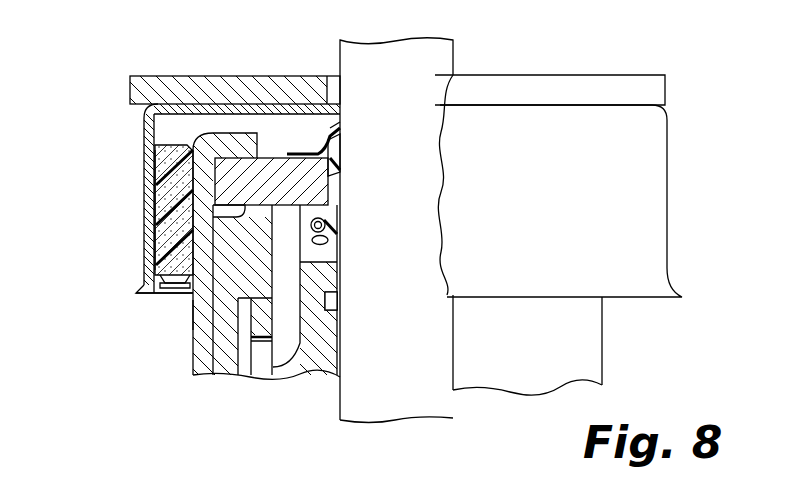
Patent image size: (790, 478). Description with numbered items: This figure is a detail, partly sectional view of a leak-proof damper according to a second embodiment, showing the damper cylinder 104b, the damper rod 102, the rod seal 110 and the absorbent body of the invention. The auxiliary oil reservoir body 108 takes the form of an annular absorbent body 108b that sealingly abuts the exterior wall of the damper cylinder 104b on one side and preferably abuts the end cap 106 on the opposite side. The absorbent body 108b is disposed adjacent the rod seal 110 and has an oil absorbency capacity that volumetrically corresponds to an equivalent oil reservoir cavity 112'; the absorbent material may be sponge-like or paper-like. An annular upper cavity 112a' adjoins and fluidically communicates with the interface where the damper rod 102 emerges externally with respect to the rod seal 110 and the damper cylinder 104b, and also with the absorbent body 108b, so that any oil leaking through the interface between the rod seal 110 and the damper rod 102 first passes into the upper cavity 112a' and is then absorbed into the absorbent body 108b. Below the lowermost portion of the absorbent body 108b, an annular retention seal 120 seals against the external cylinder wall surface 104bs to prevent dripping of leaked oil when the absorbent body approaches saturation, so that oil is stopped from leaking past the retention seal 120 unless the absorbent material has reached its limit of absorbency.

The damper rod 102 is at (462, 58).
The end cap 106 is at (143, 145).
The rod seal 110 is at (335, 170).
The annular upper cavity 112a' is at (235, 73).
The oil reservoir cavity 112' is at (121, 210).
The auxiliary oil reservoir body 108 is at (154, 219).
The annular absorbent body 108b is at (175, 281).
The annular retention seal 120 is at (172, 288).
The external cylinder wall surface 104bs is at (193, 312).
The damper cylinder 104b is at (190, 348).